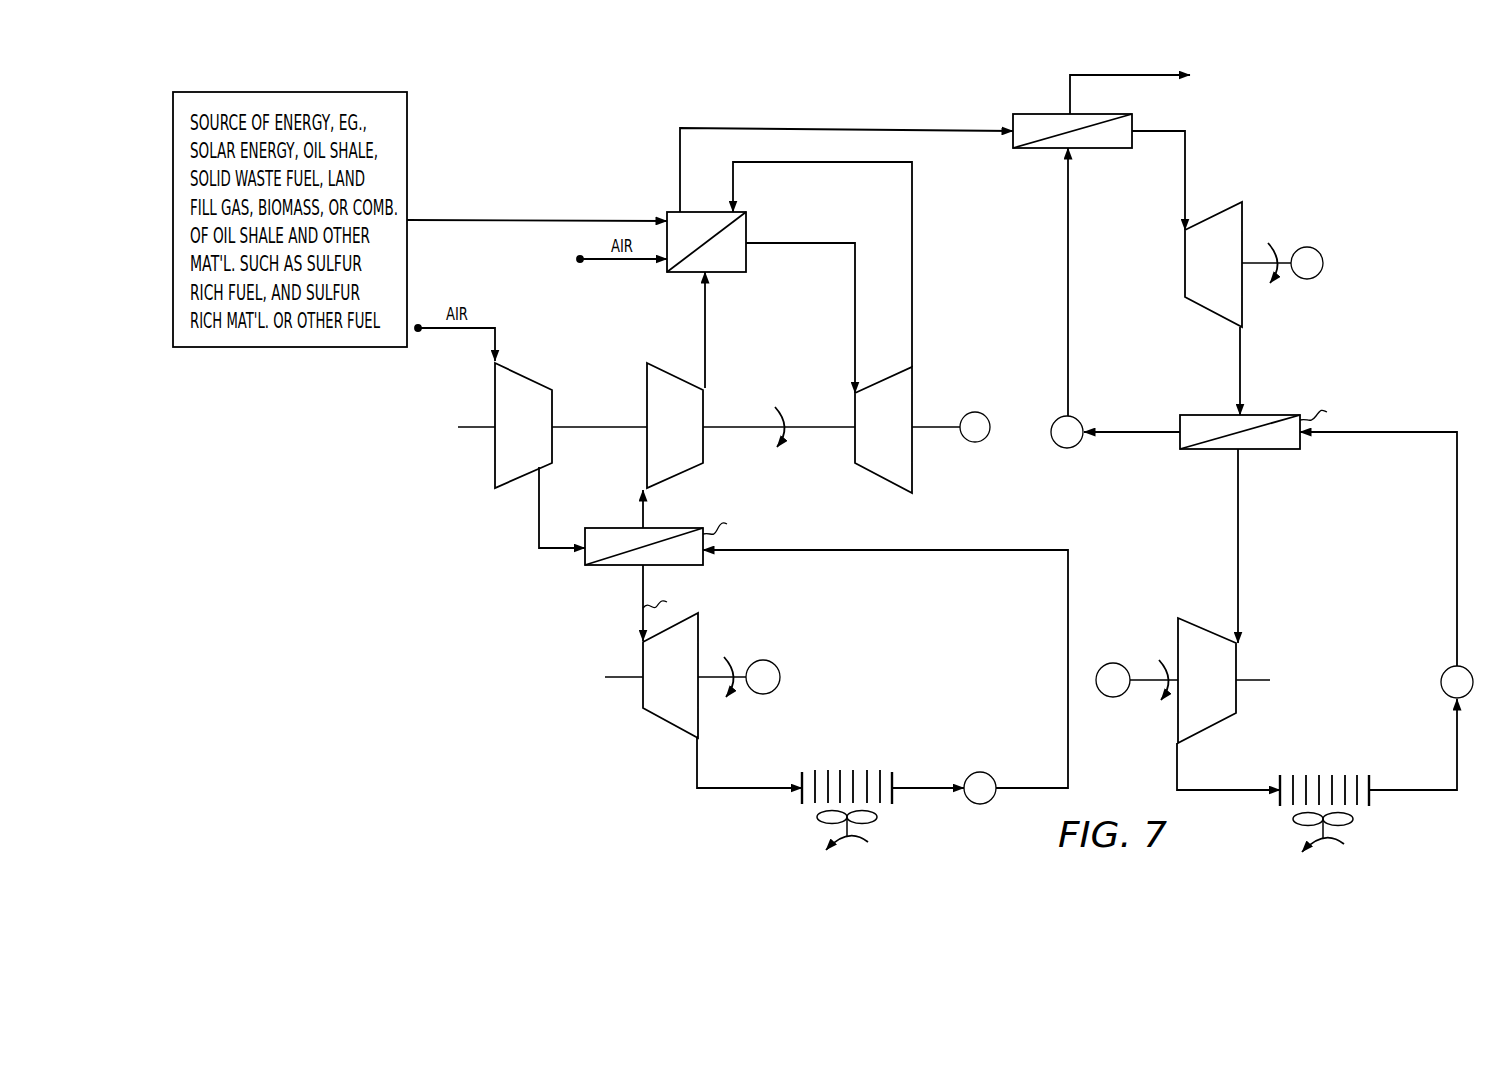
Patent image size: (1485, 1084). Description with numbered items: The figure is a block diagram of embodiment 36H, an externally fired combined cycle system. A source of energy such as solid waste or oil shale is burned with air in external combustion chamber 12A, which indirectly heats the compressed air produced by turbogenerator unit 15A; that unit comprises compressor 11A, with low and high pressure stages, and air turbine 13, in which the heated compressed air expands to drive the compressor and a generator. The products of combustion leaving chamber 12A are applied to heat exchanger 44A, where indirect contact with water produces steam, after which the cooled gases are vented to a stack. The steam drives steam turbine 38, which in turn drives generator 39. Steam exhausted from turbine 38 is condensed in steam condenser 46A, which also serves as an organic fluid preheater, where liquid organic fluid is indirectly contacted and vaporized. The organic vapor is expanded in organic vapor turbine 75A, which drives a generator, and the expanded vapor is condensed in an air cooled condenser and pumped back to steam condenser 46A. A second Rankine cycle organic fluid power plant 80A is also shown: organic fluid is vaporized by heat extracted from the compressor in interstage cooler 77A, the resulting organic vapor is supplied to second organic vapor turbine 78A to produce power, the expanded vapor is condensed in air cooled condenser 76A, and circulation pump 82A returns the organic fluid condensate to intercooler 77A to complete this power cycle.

The compressor 11A is at (590, 370).
The external combustion chamber 12A is at (748, 226).
The air turbine 13 is at (878, 381).
The turbogenerator unit 15A is at (723, 370).
The embodiment 36H is at (462, 595).
The steam turbine 38 is at (1217, 211).
The generator 39 is at (1308, 247).
The heat exchanger 44A is at (1038, 149).
The steam condenser 46A is at (1188, 414).
The organic vapor turbine 75A is at (1203, 619).
The condenser 76A is at (857, 772).
The interstage cooler 77A is at (610, 566).
The second organic vapor turbine 78A is at (700, 648).
The second Rankine cycle organic fluid power plant 80A is at (640, 762).
The circulation pump 82A is at (983, 772).